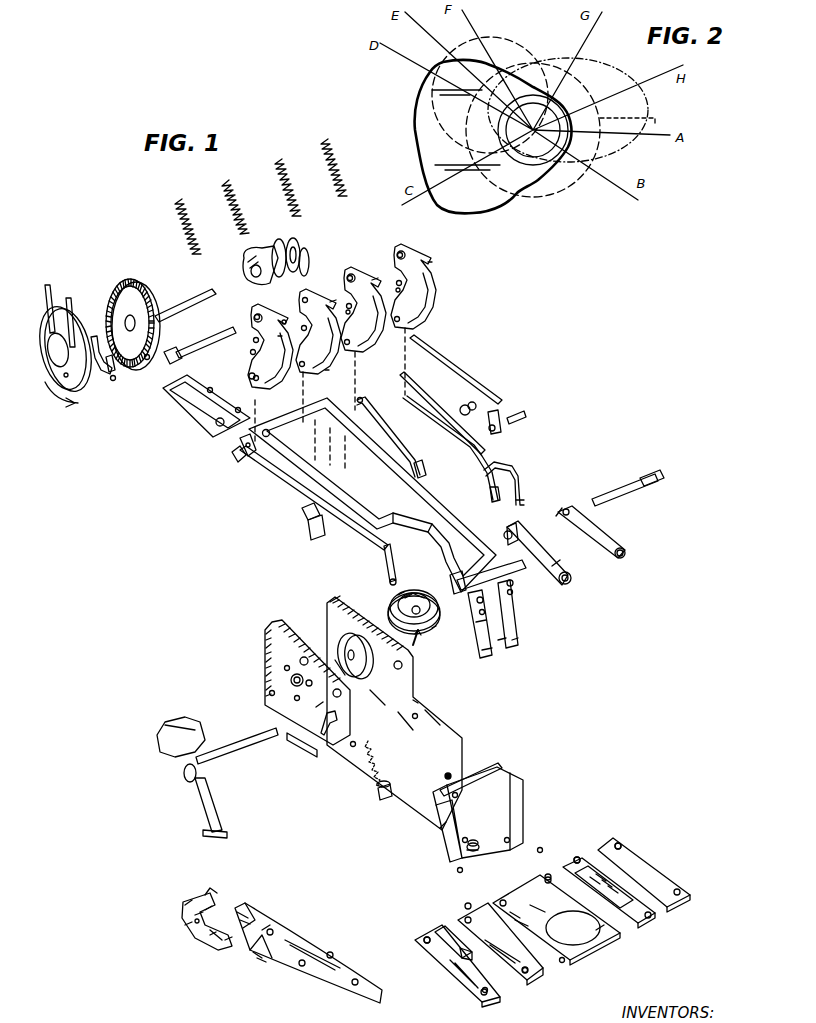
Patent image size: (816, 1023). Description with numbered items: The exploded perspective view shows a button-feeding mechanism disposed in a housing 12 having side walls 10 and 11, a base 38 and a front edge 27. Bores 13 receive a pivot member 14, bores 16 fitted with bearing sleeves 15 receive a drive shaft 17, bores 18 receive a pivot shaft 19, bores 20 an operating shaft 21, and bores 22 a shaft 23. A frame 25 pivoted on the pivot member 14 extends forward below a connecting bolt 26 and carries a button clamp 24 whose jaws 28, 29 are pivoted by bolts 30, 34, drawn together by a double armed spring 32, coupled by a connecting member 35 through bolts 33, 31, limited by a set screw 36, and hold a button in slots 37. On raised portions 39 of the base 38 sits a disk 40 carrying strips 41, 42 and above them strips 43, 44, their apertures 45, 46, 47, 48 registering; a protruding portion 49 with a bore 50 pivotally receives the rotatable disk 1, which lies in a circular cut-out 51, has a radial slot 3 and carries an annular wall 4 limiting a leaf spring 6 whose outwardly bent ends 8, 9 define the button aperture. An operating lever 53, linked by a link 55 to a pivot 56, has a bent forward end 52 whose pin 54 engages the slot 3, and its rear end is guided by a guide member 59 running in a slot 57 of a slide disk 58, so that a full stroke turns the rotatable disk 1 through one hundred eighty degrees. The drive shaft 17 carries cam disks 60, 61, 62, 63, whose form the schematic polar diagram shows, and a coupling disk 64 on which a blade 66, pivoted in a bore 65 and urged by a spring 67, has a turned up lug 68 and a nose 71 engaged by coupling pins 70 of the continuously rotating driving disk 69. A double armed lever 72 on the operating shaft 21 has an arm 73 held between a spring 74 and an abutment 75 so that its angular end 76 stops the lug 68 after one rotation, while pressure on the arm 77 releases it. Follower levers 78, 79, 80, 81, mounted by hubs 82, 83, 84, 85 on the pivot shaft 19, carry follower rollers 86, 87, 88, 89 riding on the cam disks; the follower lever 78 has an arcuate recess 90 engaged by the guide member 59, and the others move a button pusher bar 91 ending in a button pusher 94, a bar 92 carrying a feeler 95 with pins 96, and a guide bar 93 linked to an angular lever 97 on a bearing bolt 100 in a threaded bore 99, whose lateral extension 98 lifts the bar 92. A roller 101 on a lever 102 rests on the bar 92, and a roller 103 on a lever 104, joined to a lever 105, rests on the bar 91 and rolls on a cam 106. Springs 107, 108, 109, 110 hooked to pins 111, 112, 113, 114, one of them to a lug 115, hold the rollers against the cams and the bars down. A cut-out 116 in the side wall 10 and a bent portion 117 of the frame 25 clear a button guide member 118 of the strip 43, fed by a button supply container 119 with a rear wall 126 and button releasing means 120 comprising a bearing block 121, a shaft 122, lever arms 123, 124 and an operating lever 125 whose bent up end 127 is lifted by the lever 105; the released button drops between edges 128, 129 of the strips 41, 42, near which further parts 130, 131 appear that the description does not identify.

In FIG. 1, the cam assembly 1 is at (414, 642).
In FIG. 1, the cam disc 3 is at (400, 584).
In FIG. 1, the cam hub 4 is at (436, 634).
In FIG. 1, the cam wheel 6 is at (420, 598).
In FIG. 1, the cam ring 8 is at (393, 612).
In FIG. 1, the cam slot 9 is at (410, 595).
In FIG. 1, the side plate 10 is at (272, 622).
In FIG. 1, the plate edge 11 is at (336, 600).
In FIG. 1, the rear side plate 12 is at (371, 815).
In FIG. 1, the hole 13 is at (269, 693).
In FIG. 1, the pivot hole 14 is at (267, 429).
In FIG. 1, the bearing 15 is at (308, 683).
In FIG. 1, the bushing 16 is at (290, 680).
In FIG. 1, the shaft 17 is at (185, 300).
In FIG. 1, the knurled wheel 18 is at (305, 656).
In FIG. 1, the screw 19 is at (205, 338).
In FIG. 1, the hole 20 is at (345, 692).
In FIG. 1, the handle rod 21 is at (236, 748).
In FIG. 1, the hole 22 is at (357, 742).
In FIG. 1, the pin 23 is at (612, 490).
In FIG. 1, the bracket 24 is at (534, 644).
In FIG. 1, the frame 25 is at (395, 470).
In FIG. 1, the rod 26 is at (494, 765).
In FIG. 1, the channel bracket 27 is at (513, 855).
In FIG. 1, the leg end 28 is at (490, 655).
In FIG. 1, the leg end 29 is at (516, 648).
In FIG. 1, the hole 30 is at (484, 601).
In FIG. 1, the pivot 31 is at (514, 584).
In FIG. 1, the leg 32 is at (480, 624).
In FIG. 1, the hole 33 is at (480, 614).
In FIG. 1, the hole 34 is at (514, 593).
In FIG. 1, the frame end 35 is at (458, 580).
In FIG. 1, the pivot pin 36 is at (504, 535).
In FIG. 1, the slot 37 is at (502, 645).
In FIG. 1, the plate edge 38 is at (420, 745).
In FIG. 1, the hole 39 is at (506, 836).
In FIG. 1, the plate with cutout 40 is at (572, 958).
In FIG. 1, the plate 41 is at (532, 978).
In FIG. 1, the plate 42 is at (645, 926).
In FIG. 1, the plate 43 is at (470, 985).
In FIG. 1, the plate 44 is at (682, 903).
In FIG. 1, the hole 45 is at (455, 870).
In FIG. 1, the hole 46 is at (540, 847).
In FIG. 1, the hole 47 is at (462, 795).
In FIG. 1, the hole 48 is at (498, 900).
In FIG. 1, the nut seat 49 is at (472, 855).
In FIG. 1, the nut 50 is at (476, 843).
In FIG. 1, the tab 51 is at (602, 932).
In FIG. 1, the rod 52 is at (388, 576).
In FIG. 1, the rail 53 is at (283, 486).
In FIG. 1, the rod end 54 is at (388, 582).
In FIG. 1, the bolt 55 is at (300, 520).
In FIG. 1, the spring and bolt 56 is at (370, 790).
In FIG. 1, the plate 57 is at (190, 420).
In FIG. 1, the bracket 58 is at (238, 448).
In FIG. 1, the bracket 59 is at (236, 462).
In FIG. 2, the cam 60 is at (425, 110).
In FIG. 1, the cam 60 is at (241, 258).
In FIG. 2, the roller 61 is at (657, 92).
In FIG. 1, the roller 61 is at (276, 250).
In FIG. 2, the wheel 62 is at (518, 38).
In FIG. 1, the wheel 62 is at (294, 244).
In FIG. 2, the wheel 63 is at (573, 130).
In FIG. 1, the wheel 63 is at (309, 255).
In FIG. 1, the gear 64 is at (142, 296).
In FIG. 1, the nut 65 is at (160, 348).
In FIG. 1, the pawl 66 is at (110, 380).
In FIG. 1, the pin 67 is at (134, 365).
In FIG. 1, the pin 68 is at (118, 382).
In FIG. 1, the disk 69 is at (55, 377).
In FIG. 1, the pins 70 is at (40, 348).
In FIG. 1, the pawl 71 is at (95, 334).
In FIG. 1, the hub 72 is at (183, 770).
In FIG. 1, the arm 73 is at (217, 810).
In FIG. 1, the lever 74 is at (326, 740).
In FIG. 1, the pin 75 is at (316, 707).
In FIG. 1, the foot 76 is at (227, 836).
In FIG. 1, the knob 77 is at (190, 725).
In FIG. 1, the lever 78 is at (266, 316).
In FIG. 1, the pin 79 is at (332, 300).
In FIG. 1, the lever 80 is at (370, 270).
In FIG. 1, the lever 81 is at (428, 257).
In FIG. 1, the hole 82 is at (254, 318).
In FIG. 1, the lever 83 is at (308, 293).
In FIG. 1, the hole 84 is at (350, 274).
In FIG. 1, the hole 85 is at (403, 250).
In FIG. 1, the hole 86 is at (250, 354).
In FIG. 1, the pin 87 is at (287, 315).
In FIG. 1, the hole 88 is at (347, 320).
In FIG. 1, the hole 89 is at (397, 303).
In FIG. 1, the hole 90 is at (248, 376).
In FIG. 1, the pin 91 is at (363, 398).
In FIG. 1, the rod 92 is at (410, 395).
In FIG. 1, the rod 93 is at (448, 368).
In FIG. 1, the end piece 94 is at (424, 476).
In FIG. 1, the bar 95 is at (488, 480).
In FIG. 1, the end 96 is at (491, 501).
In FIG. 1, the clip 97 is at (502, 430).
In FIG. 1, the rollers 98 is at (462, 406).
In FIG. 1, the stud 99 is at (447, 772).
In FIG. 1, the pin 100 is at (516, 413).
In FIG. 1, the pivot 101 is at (626, 556).
In FIG. 1, the link 102 is at (603, 535).
In FIG. 1, the pivot 103 is at (572, 580).
In FIG. 1, the link end 104 is at (560, 565).
In FIG. 1, the link 105 is at (540, 545).
In FIG. 1, the bar 106 is at (385, 428).
In FIG. 1, the spring 107 is at (176, 204).
In FIG. 1, the spring 108 is at (224, 184).
In FIG. 1, the spring 109 is at (278, 176).
In FIG. 1, the spring 110 is at (325, 145).
In FIG. 1, the pin 111 is at (282, 336).
In FIG. 1, the pin 112 is at (337, 372).
In FIG. 1, the pin 113 is at (383, 271).
In FIG. 1, the pin 114 is at (433, 264).
In FIG. 1, the pin 115 is at (560, 508).
In FIG. 1, the plate edge 116 is at (418, 830).
In FIG. 1, the bar 117 is at (412, 528).
In FIG. 1, the bar 118 is at (450, 945).
In FIG. 1, the shoe 119 is at (309, 928).
In FIG. 1, the clip assembly 120 is at (203, 963).
In FIG. 1, the clip 121 is at (212, 910).
In FIG. 1, the clip 122 is at (212, 942).
In FIG. 1, the clip 123 is at (185, 928).
In FIG. 1, the pin 124 is at (232, 950).
In FIG. 1, the clip 125 is at (188, 900).
In FIG. 1, the edge 126 is at (262, 930).
In FIG. 1, the hook 127 is at (207, 885).
In FIG. 1, the hole 128 is at (508, 904).
In FIG. 1, the hole 129 is at (552, 884).
In FIG. 1, the bracket 130 is at (520, 498).
In FIG. 1, the bracket 131 is at (508, 473).